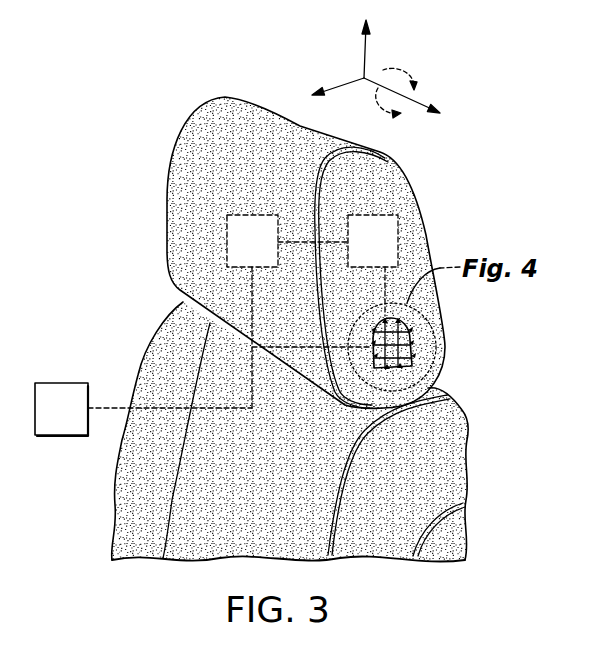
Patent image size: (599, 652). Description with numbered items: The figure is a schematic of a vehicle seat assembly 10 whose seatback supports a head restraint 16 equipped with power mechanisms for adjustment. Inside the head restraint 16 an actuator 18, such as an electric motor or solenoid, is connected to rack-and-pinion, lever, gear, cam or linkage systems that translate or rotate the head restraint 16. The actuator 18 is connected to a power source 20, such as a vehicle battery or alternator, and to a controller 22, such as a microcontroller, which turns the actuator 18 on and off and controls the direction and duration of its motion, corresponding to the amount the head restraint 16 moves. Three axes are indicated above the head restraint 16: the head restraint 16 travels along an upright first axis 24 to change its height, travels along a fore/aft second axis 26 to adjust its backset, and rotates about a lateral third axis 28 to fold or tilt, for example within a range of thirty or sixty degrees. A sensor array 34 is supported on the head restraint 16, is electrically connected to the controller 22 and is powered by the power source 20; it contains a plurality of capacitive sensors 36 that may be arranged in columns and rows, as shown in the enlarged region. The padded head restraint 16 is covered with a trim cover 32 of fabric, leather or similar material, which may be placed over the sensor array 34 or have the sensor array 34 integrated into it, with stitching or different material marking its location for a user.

The vehicle seat assembly 10 is at (510, 137).
The head restraint 16 is at (418, 220).
The actuator 18 is at (265, 253).
The power source 20 is at (74, 419).
The controller 22 is at (386, 253).
The first axis 24 is at (367, 53).
The second axis 26 is at (338, 84).
The third axis 28 is at (422, 105).
The trim cover 32 is at (362, 185).
The sensor array 34 is at (412, 345).
The capacitive sensors 36 is at (427, 346).